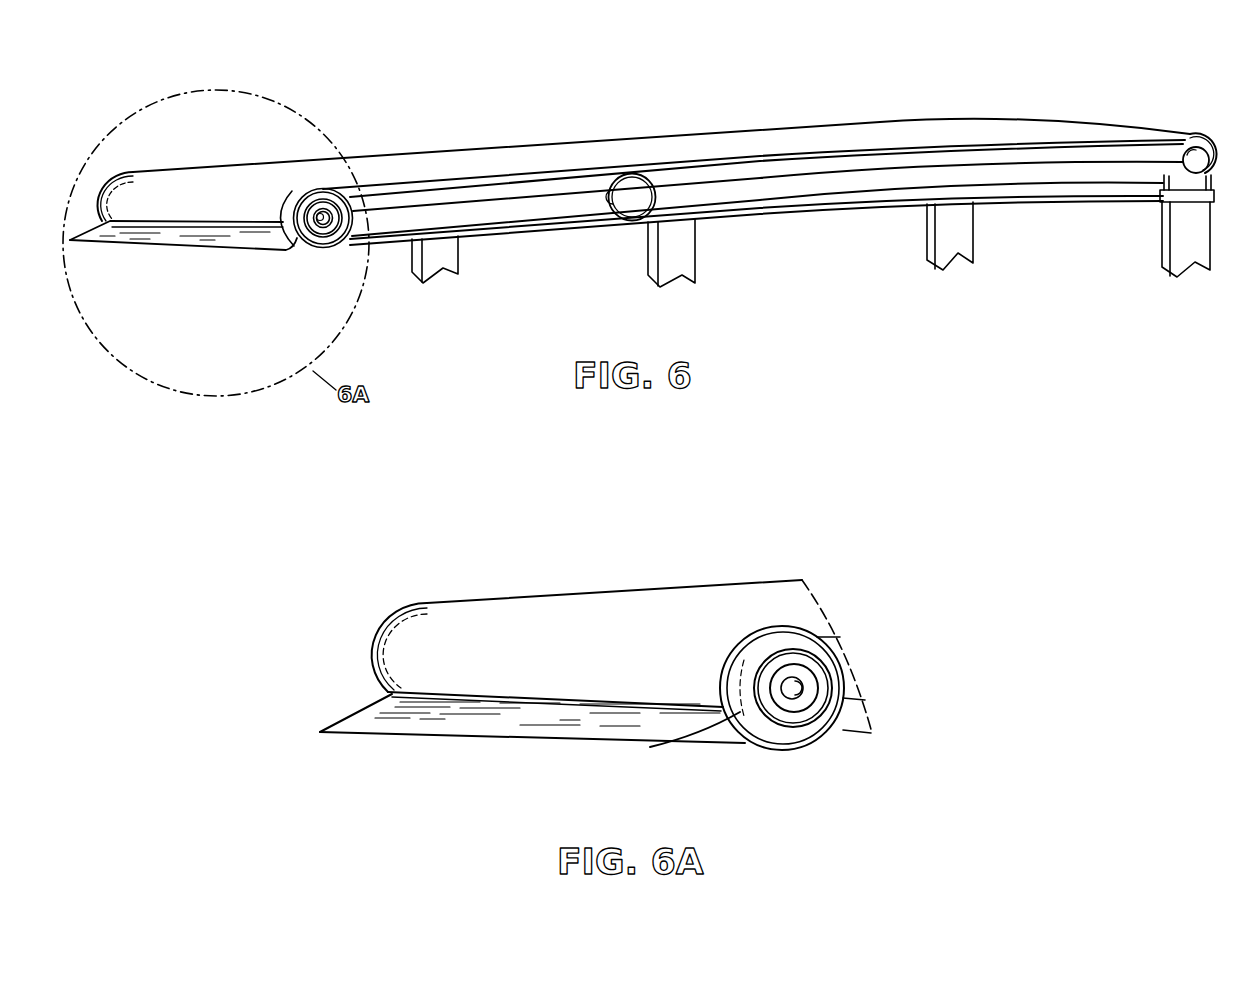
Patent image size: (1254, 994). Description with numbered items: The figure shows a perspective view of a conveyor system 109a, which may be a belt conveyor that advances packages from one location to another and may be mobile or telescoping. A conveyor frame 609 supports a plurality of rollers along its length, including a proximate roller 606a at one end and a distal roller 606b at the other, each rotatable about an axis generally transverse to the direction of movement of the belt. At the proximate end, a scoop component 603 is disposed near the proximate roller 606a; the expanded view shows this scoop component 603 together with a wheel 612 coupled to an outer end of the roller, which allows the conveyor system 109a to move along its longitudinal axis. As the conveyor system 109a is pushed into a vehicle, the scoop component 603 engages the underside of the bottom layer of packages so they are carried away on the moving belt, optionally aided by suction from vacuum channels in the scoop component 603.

In FIG. 6, the conveyor system 109a is at (947, 75).
In FIG. 6, the proximate roller 606a is at (294, 246).
In FIG. 6, the distal roller 606b is at (1205, 134).
In FIG. 6, the scoop component 603 is at (179, 242).
In FIG. 6A, the scoop component 603 is at (537, 730).
In FIG. 6, the conveyor frame 609 is at (832, 204).
In FIG. 6A, the wheel 612 is at (833, 673).